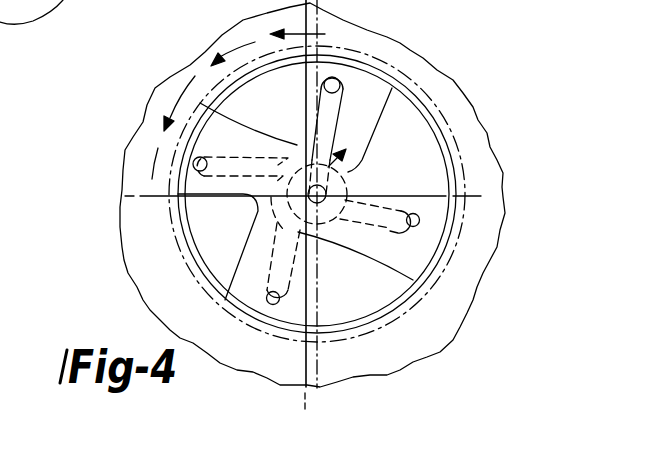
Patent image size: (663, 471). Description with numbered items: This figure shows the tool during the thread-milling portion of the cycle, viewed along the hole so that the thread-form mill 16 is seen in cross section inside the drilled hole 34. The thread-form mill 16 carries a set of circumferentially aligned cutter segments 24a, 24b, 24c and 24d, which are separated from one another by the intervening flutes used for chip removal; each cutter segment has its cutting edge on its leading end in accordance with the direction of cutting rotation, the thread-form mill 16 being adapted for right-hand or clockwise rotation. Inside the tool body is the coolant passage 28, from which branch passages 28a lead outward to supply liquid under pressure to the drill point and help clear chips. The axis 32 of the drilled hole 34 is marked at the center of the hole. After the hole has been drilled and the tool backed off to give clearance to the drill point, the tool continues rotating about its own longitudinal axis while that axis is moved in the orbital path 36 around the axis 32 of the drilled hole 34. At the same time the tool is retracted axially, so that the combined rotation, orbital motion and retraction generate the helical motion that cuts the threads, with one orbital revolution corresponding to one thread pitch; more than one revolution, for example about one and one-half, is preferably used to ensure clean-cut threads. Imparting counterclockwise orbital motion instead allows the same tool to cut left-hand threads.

The thread-form mill 16 is at (405, 152).
The cutter segment 24a is at (347, 58).
The cutter segment 24b is at (168, 177).
The cutter segment 24c is at (264, 332).
The cutter segment 24d is at (432, 253).
The coolant passage 28 is at (304, 157).
The branch passage 28a is at (383, 227).
The axis of the drilled hole 32 is at (325, 192).
The drilled hole 34 is at (455, 170).
The orbital path 36 is at (316, 196).